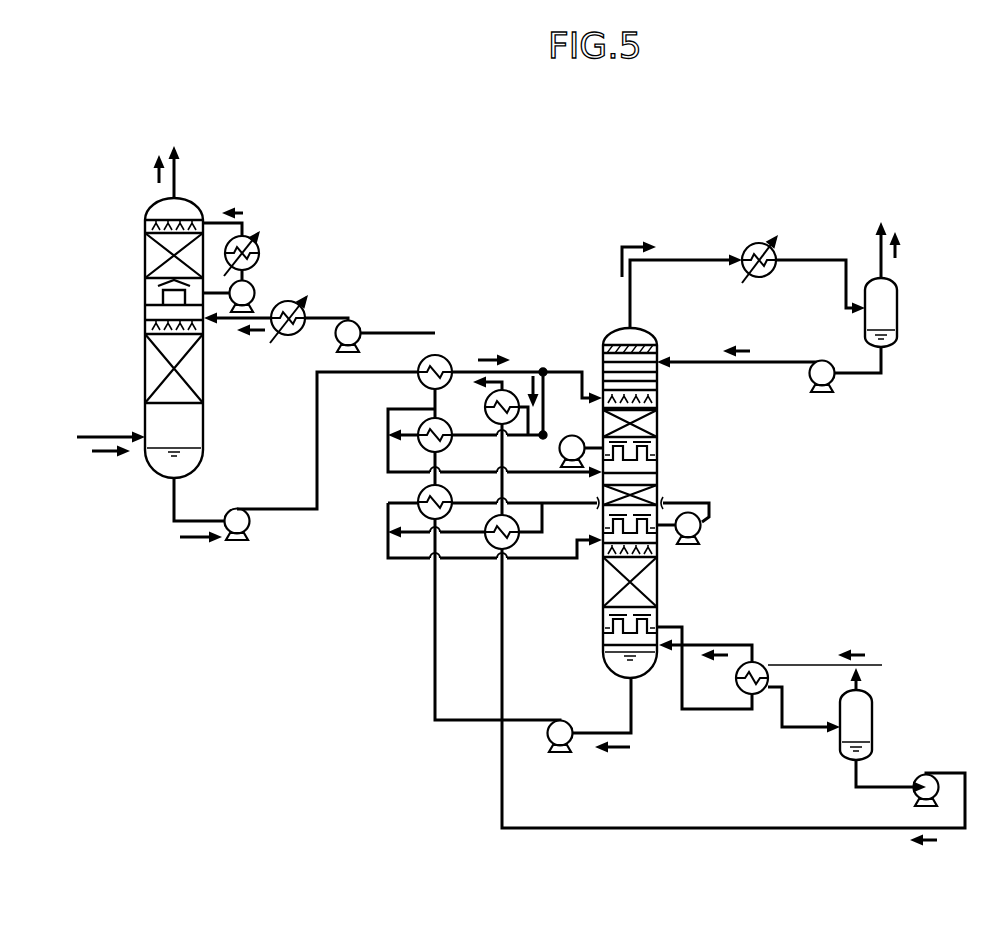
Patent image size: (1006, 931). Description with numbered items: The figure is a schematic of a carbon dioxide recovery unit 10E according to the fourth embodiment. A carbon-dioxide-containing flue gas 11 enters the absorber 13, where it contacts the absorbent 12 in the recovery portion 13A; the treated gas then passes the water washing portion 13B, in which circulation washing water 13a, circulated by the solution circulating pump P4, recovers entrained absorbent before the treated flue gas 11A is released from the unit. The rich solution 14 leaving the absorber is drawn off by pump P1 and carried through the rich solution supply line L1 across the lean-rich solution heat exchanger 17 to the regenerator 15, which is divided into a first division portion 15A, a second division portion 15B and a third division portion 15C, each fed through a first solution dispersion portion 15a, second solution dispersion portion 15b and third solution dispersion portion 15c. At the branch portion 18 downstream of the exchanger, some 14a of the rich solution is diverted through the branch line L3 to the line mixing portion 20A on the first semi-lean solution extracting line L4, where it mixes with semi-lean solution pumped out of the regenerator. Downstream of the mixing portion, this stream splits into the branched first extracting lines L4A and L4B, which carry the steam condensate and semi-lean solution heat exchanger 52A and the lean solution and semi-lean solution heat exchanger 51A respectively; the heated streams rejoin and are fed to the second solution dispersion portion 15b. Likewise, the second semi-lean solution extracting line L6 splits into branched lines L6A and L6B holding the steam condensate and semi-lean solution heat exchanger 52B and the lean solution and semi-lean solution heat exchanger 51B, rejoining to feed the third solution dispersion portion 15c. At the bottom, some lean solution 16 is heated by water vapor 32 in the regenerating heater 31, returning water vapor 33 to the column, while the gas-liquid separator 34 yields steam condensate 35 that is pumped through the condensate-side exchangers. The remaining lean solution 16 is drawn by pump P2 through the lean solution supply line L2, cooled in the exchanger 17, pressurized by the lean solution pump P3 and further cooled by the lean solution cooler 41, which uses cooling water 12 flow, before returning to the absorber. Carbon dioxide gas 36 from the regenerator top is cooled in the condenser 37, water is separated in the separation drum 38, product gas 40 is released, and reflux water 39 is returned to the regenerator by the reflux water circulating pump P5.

The CO2 recovery unit 10E is at (452, 160).
The CO2-containing flue gas 11 is at (104, 460).
The CO2-removed flue gas 11A is at (152, 173).
The CO2 absorbent 12 is at (250, 340).
The CO2 absorber 13 is at (182, 318).
The circulation washing water 13a is at (238, 220).
The CO2 recovery portion 13A is at (148, 370).
The water washing portion 13B is at (148, 255).
The rich solution 14 is at (195, 548).
The branched rich solution 14a is at (531, 372).
The absorbent regenerator 15 is at (642, 459).
The first solution dispersion portion 15a is at (646, 398).
The first division portion 15A is at (652, 421).
The second solution dispersion portion 15b is at (646, 458).
The second division portion 15B is at (657, 498).
The third solution dispersion portion 15c is at (648, 543).
The third division portion 15C is at (652, 576).
The lean solution 16 is at (618, 752).
The lean-rich solution heat exchanger 17 is at (418, 360).
The branch portion 18 is at (540, 370).
The line mixing portion 20A is at (547, 434).
The regenerating heater 31 is at (760, 664).
The water vapor 32 is at (854, 650).
The water vapor 33 is at (716, 662).
The gas-liquid separator 34 is at (873, 718).
The steam condensate 35 is at (924, 848).
The CO2 gas 36 is at (628, 250).
The condenser 37 is at (752, 242).
The separation drum 38 is at (898, 303).
The reflux water 39 is at (740, 346).
The CO2 gas 40 is at (902, 246).
The lean solution cooler 41 is at (290, 343).
The lean solution and semi-lean solution heat exchanger 51A is at (420, 432).
The lean solution and semi-lean solution heat exchanger 51B is at (448, 520).
The steam condensate and semi-lean solution heat exchanger 52A is at (490, 394).
The steam condensate and semi-lean solution heat exchanger 52B is at (515, 552).
The pump P1 is at (240, 509).
The pump P2 is at (565, 722).
The lean solution pump P3 is at (353, 321).
The solution circulating pump P4 is at (254, 290).
The reflux water circulating pump P5 is at (826, 364).
The rich solution supply line L1 is at (300, 512).
The lean solution supply line L2 is at (434, 640).
The branch line L3 is at (574, 368).
The first semi-lean solution extracting line L4 is at (532, 460).
The first semi-lean solution extracting line L4A is at (388, 408).
The first semi-lean solution extracting line L4B is at (495, 456).
The second semi-lean solution extracting line L6 is at (578, 540).
The second semi-lean solution extracting line L6A is at (390, 532).
The second semi-lean solution extracting line L6B is at (388, 503).